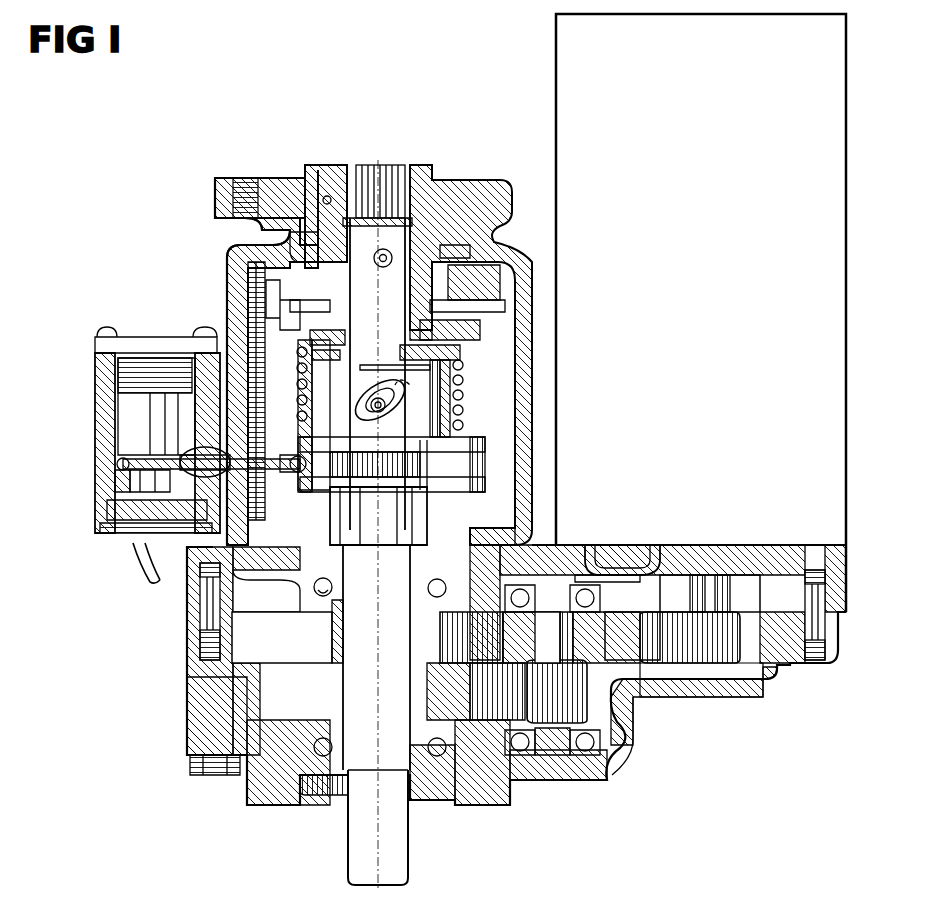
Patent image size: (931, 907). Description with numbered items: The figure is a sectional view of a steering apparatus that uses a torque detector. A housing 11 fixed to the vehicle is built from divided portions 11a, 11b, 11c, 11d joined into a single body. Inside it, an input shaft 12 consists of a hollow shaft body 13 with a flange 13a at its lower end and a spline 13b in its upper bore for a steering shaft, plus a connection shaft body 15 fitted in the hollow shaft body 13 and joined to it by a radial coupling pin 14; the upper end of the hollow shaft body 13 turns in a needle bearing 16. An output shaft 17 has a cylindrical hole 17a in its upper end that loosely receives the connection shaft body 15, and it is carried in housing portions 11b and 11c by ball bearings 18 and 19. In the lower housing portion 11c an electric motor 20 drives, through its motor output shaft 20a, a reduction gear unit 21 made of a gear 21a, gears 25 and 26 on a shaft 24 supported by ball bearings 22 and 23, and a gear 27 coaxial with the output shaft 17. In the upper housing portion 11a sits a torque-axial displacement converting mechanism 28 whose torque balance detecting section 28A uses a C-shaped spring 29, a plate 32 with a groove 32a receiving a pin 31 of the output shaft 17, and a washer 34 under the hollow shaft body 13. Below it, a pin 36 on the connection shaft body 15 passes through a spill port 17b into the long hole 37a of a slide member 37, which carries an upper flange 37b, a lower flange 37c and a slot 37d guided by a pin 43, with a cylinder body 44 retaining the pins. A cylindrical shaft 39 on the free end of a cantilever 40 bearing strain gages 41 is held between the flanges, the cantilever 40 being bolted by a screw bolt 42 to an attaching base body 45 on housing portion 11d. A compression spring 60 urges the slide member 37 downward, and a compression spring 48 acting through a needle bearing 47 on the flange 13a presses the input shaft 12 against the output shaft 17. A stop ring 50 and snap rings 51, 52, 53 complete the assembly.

The housing 11 is at (605, 795).
The upper housing portion 11a is at (272, 245).
The housing portion 11b is at (190, 603).
The lower housing portion 11c is at (830, 625).
The housing portion 11d is at (100, 438).
The input shaft 12 is at (420, 163).
The hollow shaft body 13 is at (473, 182).
The flange 13a is at (266, 286).
The spline 13b is at (372, 176).
The coupling pin 14 is at (384, 250).
The connection shaft body 15 is at (500, 290).
The needle bearing 16 is at (326, 180).
The output shaft 17 is at (400, 848).
The cylindrical hole 17a is at (440, 350).
The spill port 17b is at (350, 440).
The ball bearing 18 is at (503, 538).
The ball bearing 19 is at (465, 760).
The electric motor 20 is at (830, 182).
The motor output shaft 20a is at (710, 604).
The reduction gear unit 21 is at (607, 783).
The gear 21a is at (722, 657).
The ball bearing 22 is at (598, 550).
The ball bearing 23 is at (540, 758).
The shaft 24 is at (612, 600).
The gear 25 is at (677, 695).
The gear 26 is at (565, 690).
The gear 27 is at (490, 730).
The torque-axial displacement converting mechanism 28 is at (470, 262).
The torque balance detecting section 28A is at (258, 316).
The spring 29 is at (503, 297).
The pin 31 is at (303, 383).
The plate 32 is at (445, 368).
The groove 32a is at (300, 360).
The washer 34 is at (450, 330).
The pin 36 is at (400, 392).
The slide member 37 is at (312, 483).
The long hole 37a is at (465, 412).
The upper flange 37b is at (470, 482).
The lower flange 37c is at (452, 480).
The slot 37d is at (300, 400).
The cylindrical shaft 39 is at (292, 492).
The cantilever 40 is at (115, 467).
The strain gages 41 is at (187, 527).
The screw bolt 42 is at (112, 505).
The pin 43 is at (343, 387).
The cylinder body 44 is at (452, 395).
The attaching base body 45 is at (147, 418).
The needle bearing 47 is at (290, 240).
The compression spring 48 is at (275, 230).
The stop ring 50 is at (333, 793).
The snap ring 51 is at (292, 613).
The snap ring 52 is at (332, 615).
The snap ring 53 is at (323, 740).
The compression spring 60 is at (470, 445).